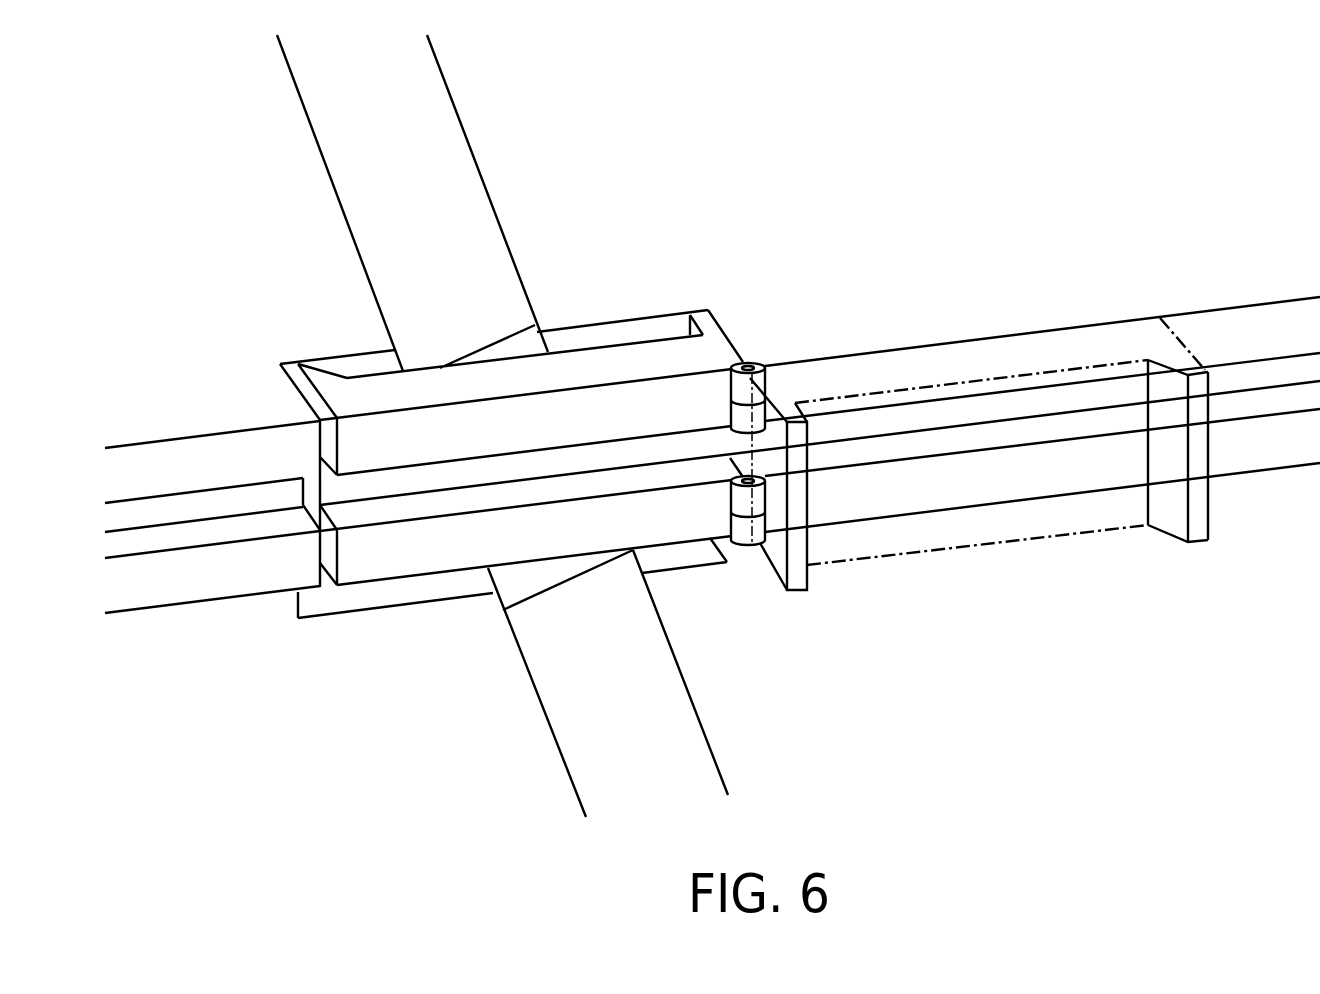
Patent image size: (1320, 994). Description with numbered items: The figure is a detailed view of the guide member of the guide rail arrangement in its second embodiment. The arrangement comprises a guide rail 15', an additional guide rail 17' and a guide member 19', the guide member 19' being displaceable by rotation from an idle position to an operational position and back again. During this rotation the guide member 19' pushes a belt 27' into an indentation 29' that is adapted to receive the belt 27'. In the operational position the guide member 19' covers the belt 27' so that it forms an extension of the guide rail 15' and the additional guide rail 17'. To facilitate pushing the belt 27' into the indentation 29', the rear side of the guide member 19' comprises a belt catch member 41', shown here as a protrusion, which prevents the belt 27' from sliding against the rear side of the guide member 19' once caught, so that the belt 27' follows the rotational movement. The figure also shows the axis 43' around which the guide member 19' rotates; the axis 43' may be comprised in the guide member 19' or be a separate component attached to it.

The guide rail 15' is at (712, 368).
The additional guide rail 17' is at (712, 540).
The guide member 19' is at (753, 507).
The belt 27' is at (534, 426).
The indentation 29' is at (511, 354).
The belt catch member 41' is at (291, 432).
The axis 43' is at (771, 429).